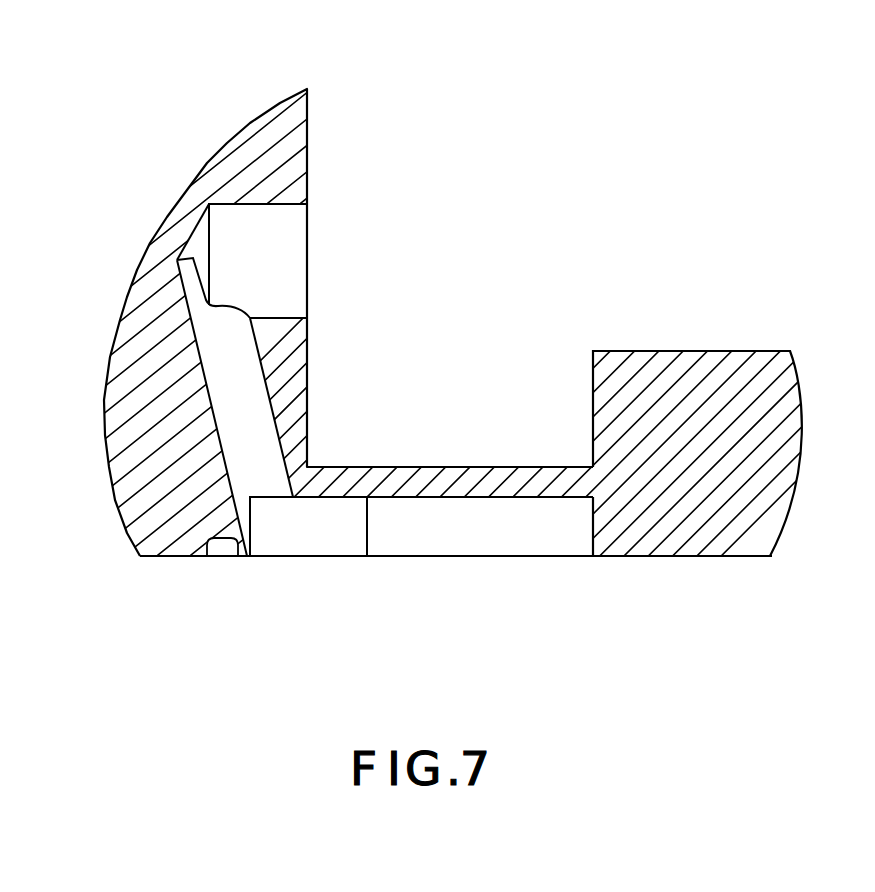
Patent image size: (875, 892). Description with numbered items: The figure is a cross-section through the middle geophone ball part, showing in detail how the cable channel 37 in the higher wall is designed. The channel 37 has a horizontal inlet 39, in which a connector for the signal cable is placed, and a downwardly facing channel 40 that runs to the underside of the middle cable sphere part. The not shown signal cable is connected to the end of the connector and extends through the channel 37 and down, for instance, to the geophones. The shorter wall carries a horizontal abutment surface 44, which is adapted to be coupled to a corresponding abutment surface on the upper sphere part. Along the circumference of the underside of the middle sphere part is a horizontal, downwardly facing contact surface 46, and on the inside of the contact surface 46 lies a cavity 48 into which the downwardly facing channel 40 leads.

The channel 37 is at (197, 327).
The horizontal inlet 39 is at (289, 204).
The downwardly facing channel 40 is at (250, 390).
The horizontal abutment surface 44 is at (704, 351).
The contact surface 46 is at (187, 557).
The cavity 48 is at (433, 548).